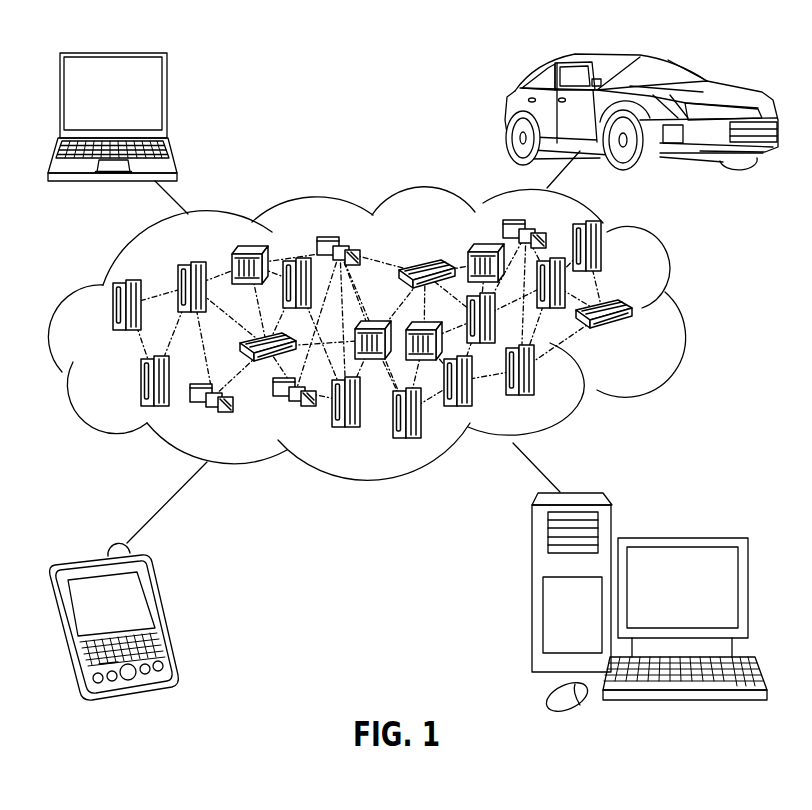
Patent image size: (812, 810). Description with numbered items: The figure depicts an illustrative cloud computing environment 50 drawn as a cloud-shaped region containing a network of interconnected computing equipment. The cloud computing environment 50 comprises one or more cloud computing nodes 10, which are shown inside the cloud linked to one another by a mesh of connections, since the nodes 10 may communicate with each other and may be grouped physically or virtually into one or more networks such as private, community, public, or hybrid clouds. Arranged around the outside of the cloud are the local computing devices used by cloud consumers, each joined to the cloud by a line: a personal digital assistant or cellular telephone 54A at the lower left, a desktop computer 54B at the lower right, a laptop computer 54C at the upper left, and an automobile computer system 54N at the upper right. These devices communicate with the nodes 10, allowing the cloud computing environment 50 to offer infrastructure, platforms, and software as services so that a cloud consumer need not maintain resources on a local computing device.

The cloud computing nodes 10 is at (413, 329).
The cloud computing environment 50 is at (680, 306).
The personal digital assistant or cellular telephone 54A is at (157, 611).
The desktop computer 54B is at (681, 538).
The laptop computer 54C is at (167, 97).
The automobile computer system 54N is at (513, 120).